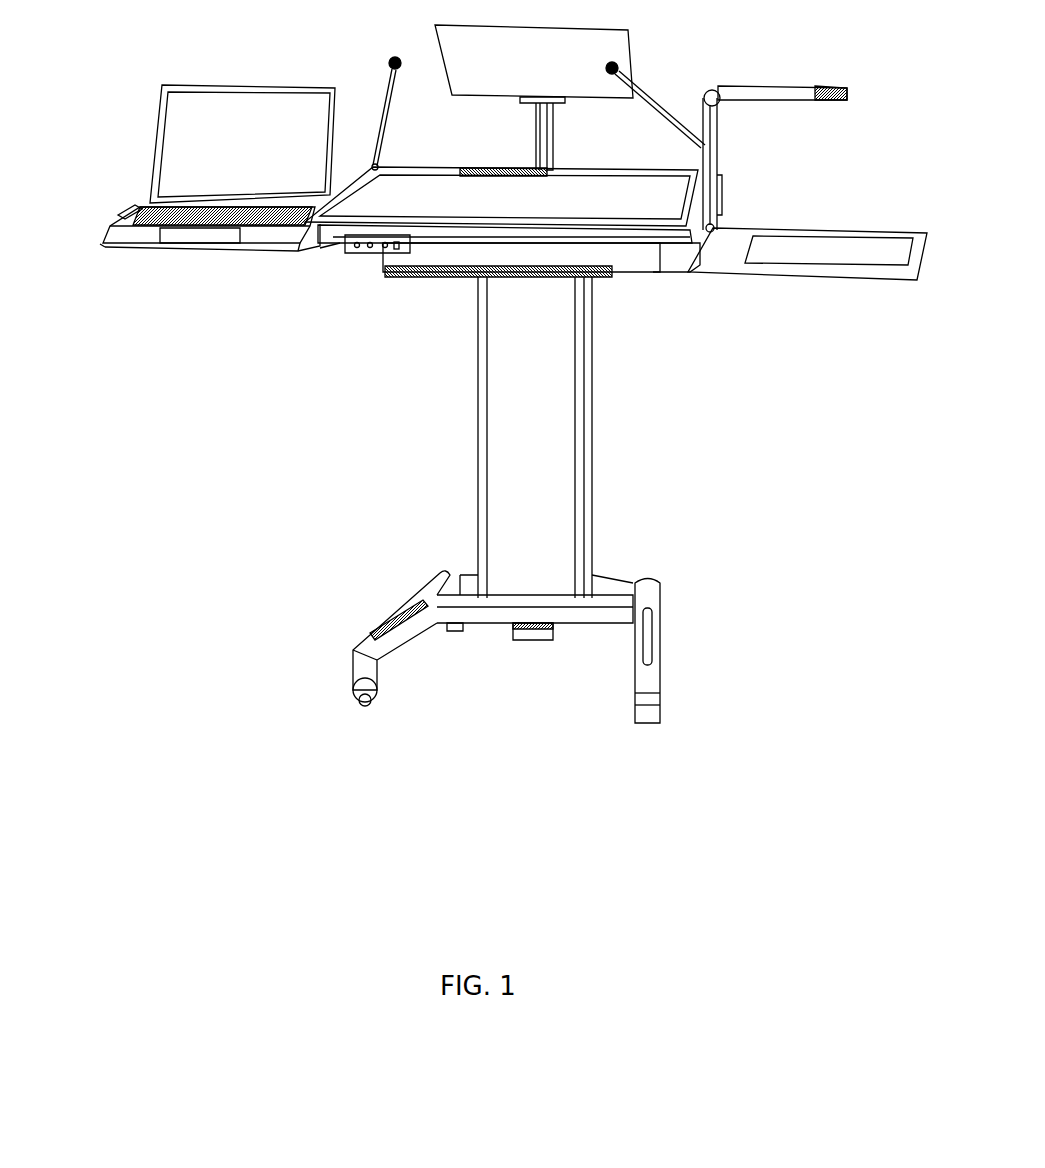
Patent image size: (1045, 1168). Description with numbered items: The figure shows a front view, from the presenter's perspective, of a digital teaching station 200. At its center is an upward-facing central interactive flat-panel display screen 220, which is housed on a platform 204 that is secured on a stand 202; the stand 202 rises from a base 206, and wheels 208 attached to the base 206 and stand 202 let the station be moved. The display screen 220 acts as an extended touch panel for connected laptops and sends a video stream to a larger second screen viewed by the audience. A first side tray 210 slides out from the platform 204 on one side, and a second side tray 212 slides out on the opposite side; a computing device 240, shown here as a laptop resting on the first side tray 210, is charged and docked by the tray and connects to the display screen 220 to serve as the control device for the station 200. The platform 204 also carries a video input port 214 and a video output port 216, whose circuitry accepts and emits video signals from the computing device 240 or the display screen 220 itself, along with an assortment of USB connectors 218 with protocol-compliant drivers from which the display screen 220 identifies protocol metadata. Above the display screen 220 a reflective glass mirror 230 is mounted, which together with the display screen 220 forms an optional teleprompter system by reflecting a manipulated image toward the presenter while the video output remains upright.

The digital teaching station 200 is at (96, 55).
The stand 202 is at (547, 348).
The platform 204 is at (585, 263).
The base 206 is at (635, 598).
The wheels 208 is at (375, 696).
The first side tray 210 is at (306, 247).
The second side tray 212 is at (715, 250).
The video input port 214 is at (396, 244).
The video output port 216 is at (385, 247).
The connectors 218 is at (362, 246).
The central interactive flat-panel display screen 220 is at (405, 194).
The reflective glass mirror 230 is at (617, 48).
The computing device 240 is at (217, 230).